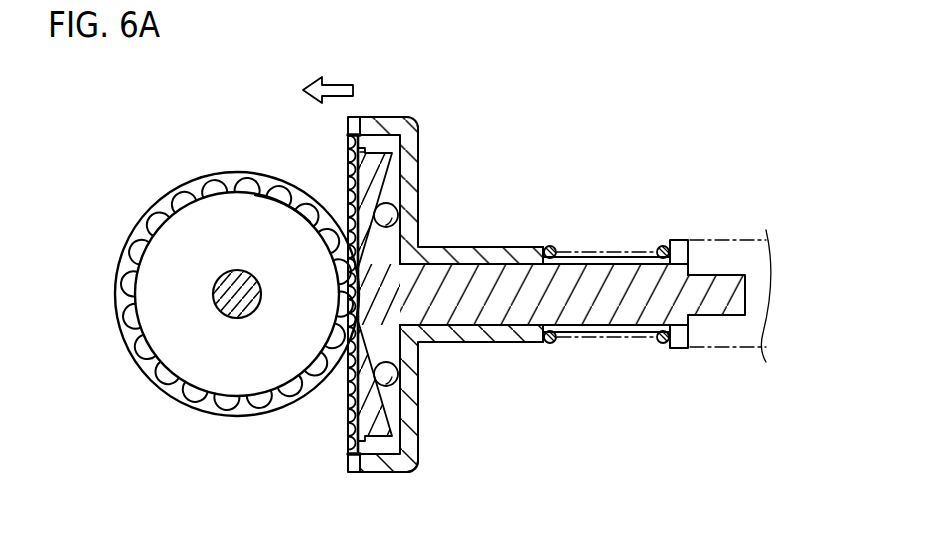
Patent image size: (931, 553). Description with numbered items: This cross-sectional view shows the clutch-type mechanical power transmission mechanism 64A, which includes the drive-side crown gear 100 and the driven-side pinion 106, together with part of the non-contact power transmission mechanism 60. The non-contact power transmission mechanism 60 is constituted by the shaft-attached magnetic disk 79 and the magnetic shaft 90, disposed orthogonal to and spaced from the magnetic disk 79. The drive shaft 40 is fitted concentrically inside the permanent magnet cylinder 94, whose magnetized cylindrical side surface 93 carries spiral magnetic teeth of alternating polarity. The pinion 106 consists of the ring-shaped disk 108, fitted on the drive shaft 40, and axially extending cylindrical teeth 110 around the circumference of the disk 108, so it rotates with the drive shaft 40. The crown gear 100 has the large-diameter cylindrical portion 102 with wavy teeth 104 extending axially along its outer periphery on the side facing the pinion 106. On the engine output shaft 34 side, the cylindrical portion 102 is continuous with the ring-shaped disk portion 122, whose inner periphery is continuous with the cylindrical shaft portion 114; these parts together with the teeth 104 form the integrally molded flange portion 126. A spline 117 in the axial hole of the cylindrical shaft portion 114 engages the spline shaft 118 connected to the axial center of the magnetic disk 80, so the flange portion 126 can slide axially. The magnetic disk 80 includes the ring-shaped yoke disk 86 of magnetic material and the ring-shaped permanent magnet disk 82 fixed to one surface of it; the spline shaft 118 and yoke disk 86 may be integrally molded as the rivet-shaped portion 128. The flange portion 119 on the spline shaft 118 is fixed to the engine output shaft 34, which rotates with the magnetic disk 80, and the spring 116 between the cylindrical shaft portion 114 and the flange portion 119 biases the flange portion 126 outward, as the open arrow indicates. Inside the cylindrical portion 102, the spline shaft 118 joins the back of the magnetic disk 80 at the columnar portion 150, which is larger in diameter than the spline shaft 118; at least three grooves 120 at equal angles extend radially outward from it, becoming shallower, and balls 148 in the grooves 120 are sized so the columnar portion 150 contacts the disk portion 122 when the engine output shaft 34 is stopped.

The engine output shaft 34 is at (716, 234).
The drive shaft 40 is at (228, 281).
The non-contact power transmission mechanism 60 is at (270, 133).
The mechanical power transmission mechanism 64A is at (205, 453).
The shaft-attached magnetic disk 79 is at (339, 396).
The magnetic disk 80 is at (378, 142).
The permanent magnet disk 82 is at (348, 177).
The yoke disk 86 is at (370, 163).
The magnetic shaft 90 is at (165, 342).
The magnetized cylindrical side surface 93 is at (230, 183).
The permanent magnet cylinder 94 is at (288, 208).
The crown gear 100 is at (277, 443).
The large-diameter cylindrical portion 102 is at (374, 466).
The wavy teeth 104 is at (347, 423).
The pinion 106 is at (185, 137).
The ring-shaped disk 108 is at (142, 228).
The cylindrical teeth 110 is at (187, 197).
The cylindrical shaft portion 114 is at (537, 246).
The spring 116 is at (663, 245).
The spline 117 is at (556, 282).
The spline shaft 118 is at (617, 333).
The flange portion 119 is at (683, 350).
The grooves 120 is at (383, 177).
The disk portion 122 is at (410, 441).
The flange portion 126 is at (418, 479).
The rivet-shaped portion 128 is at (525, 302).
The balls 148 is at (396, 214).
The columnar portion 150 is at (377, 250).